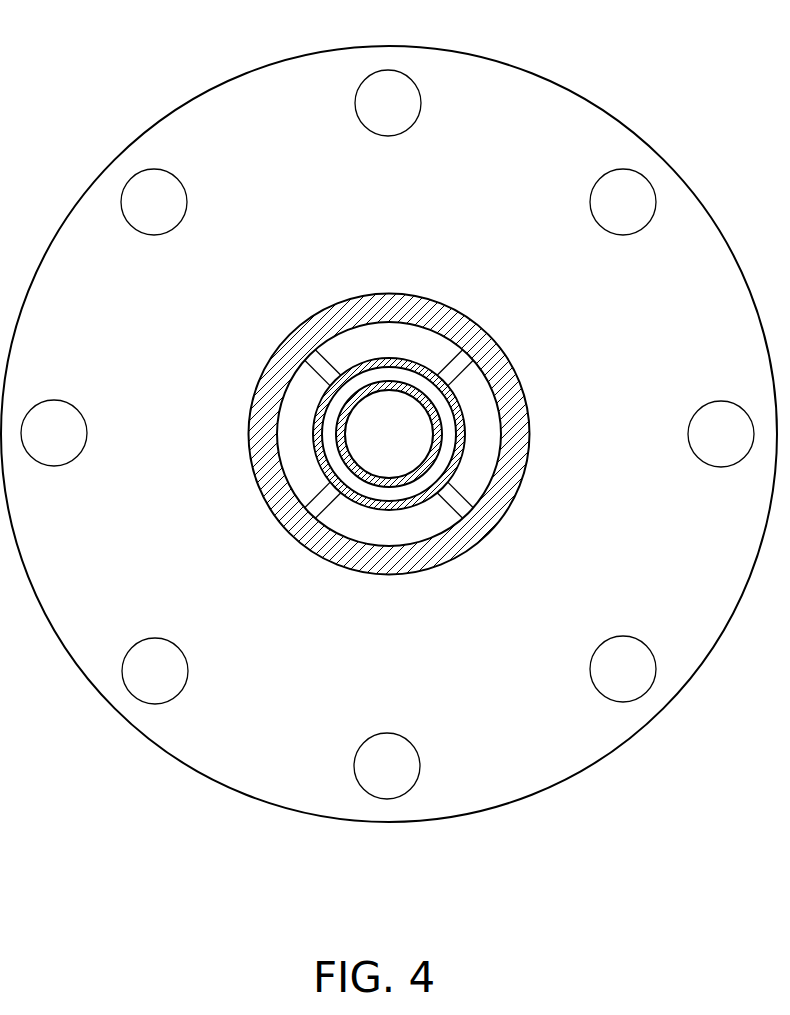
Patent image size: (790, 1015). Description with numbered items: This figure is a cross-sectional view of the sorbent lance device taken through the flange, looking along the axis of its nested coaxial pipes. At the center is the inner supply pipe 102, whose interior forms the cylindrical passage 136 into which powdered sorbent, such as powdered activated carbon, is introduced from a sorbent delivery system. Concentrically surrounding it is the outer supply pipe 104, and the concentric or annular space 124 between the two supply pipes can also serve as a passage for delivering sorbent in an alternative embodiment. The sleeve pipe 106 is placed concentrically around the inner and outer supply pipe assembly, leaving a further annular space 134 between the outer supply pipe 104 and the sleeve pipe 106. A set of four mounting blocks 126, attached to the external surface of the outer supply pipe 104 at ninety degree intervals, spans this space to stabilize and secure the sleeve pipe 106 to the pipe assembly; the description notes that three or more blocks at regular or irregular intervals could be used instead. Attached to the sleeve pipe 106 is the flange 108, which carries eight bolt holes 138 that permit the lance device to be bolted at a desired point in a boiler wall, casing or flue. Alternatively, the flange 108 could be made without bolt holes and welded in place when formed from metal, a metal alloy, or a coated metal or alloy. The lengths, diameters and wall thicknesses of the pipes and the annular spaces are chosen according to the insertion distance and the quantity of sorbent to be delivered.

The inner supply pipe 102 is at (443, 413).
The outer supply pipe 104 is at (366, 506).
The sleeve pipe 106 is at (336, 568).
The flange 108 is at (296, 93).
The annular space 124 is at (437, 460).
The mounting blocks 126 is at (305, 363).
The annular space 134 is at (293, 407).
The cylindrical passage 136 is at (389, 408).
The bolt holes 138 is at (393, 98).